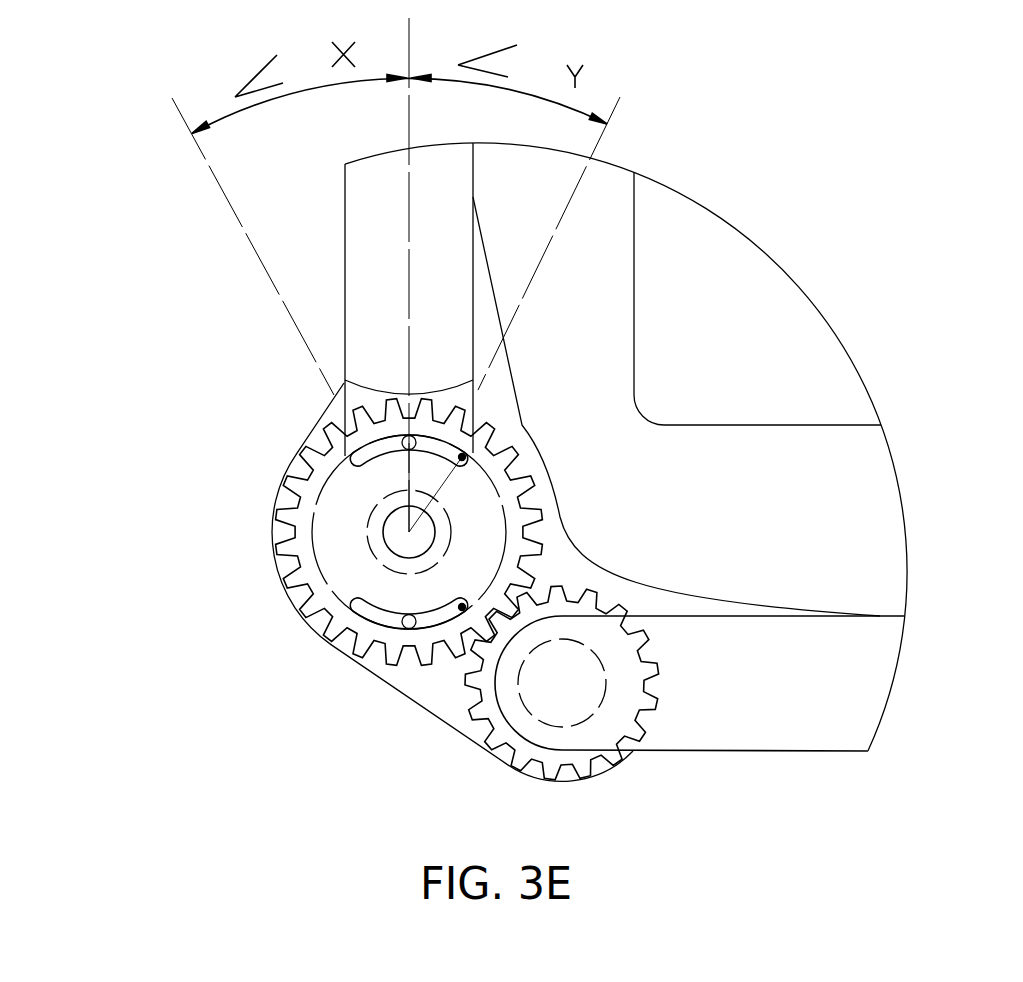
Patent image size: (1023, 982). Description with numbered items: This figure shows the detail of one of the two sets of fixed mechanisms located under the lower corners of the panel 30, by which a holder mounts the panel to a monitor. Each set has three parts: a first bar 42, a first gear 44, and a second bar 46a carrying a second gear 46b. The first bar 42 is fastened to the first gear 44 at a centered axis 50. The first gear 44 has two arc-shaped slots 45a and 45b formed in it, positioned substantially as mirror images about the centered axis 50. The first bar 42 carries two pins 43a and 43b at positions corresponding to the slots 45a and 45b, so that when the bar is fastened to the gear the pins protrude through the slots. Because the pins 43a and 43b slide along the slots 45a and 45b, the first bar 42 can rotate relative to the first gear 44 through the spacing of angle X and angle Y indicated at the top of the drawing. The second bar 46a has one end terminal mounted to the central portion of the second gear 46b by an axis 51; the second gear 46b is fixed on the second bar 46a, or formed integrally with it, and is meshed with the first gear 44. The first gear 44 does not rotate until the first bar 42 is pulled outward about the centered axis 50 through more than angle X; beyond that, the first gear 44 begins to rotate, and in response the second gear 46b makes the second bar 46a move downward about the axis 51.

The panel 30 is at (735, 327).
The first bar 42 is at (375, 230).
The pin 43a is at (403, 443).
The pin 43b is at (403, 621).
The first gear 44 is at (397, 644).
The arc-shaped slot 45a is at (462, 457).
The arc-shaped slot 45b is at (462, 607).
The second bar 46a is at (798, 700).
The second gear 46b is at (532, 753).
The centered axis 50 is at (409, 532).
The axis 51 is at (562, 683).